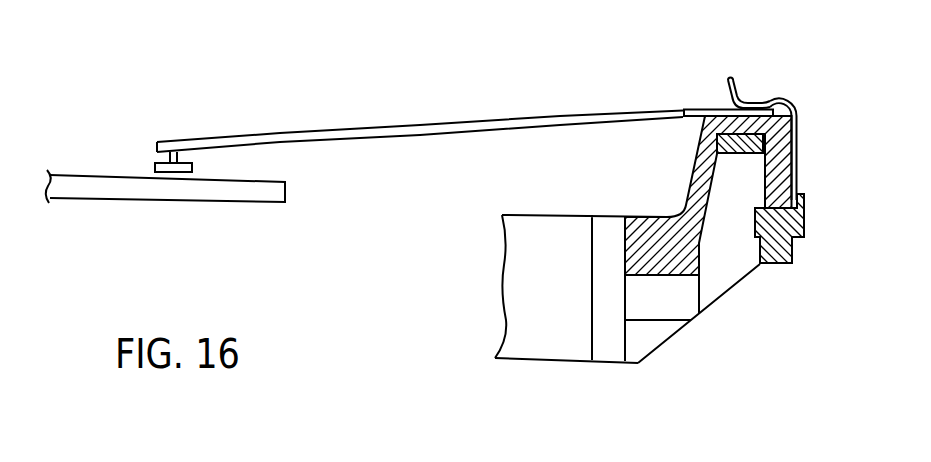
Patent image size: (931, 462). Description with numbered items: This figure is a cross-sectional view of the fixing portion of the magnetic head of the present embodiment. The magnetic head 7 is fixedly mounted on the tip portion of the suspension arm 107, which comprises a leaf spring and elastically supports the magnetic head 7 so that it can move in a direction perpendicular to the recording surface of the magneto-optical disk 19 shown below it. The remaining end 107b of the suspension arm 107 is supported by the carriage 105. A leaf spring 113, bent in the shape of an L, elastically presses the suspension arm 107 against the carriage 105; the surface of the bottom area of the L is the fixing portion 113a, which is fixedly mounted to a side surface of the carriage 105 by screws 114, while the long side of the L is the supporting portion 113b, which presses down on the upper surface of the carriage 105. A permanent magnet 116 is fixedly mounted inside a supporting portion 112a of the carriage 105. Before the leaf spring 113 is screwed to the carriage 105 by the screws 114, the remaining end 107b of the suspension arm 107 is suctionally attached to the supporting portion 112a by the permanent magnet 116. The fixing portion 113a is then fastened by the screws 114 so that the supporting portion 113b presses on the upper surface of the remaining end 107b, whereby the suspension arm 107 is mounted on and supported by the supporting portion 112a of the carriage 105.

The magnetic head 7 is at (153, 170).
The magneto-optical disk 19 is at (184, 213).
The carriage 105 is at (544, 338).
The suspension arm 107 is at (465, 108).
The remaining end of the suspension arm 107b is at (697, 109).
The supporting portion of the carriage 112a is at (694, 133).
The leaf spring 113 is at (774, 112).
The fixing portion 113a is at (797, 178).
The supporting portion 113b is at (730, 80).
The screws 114 is at (803, 238).
The permanent magnet 116 is at (733, 166).